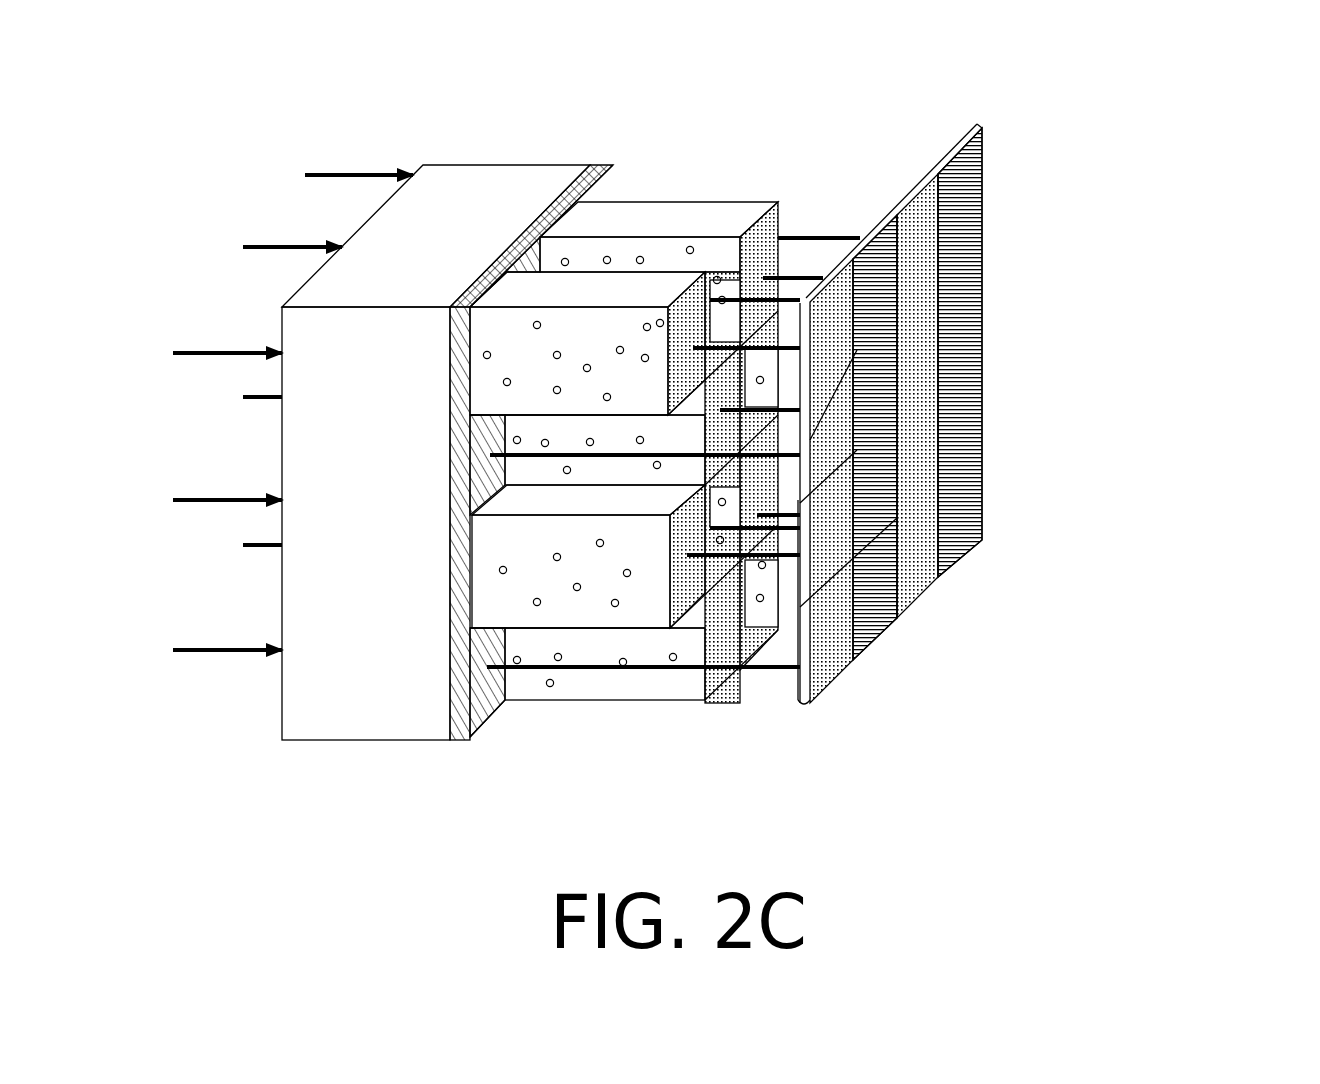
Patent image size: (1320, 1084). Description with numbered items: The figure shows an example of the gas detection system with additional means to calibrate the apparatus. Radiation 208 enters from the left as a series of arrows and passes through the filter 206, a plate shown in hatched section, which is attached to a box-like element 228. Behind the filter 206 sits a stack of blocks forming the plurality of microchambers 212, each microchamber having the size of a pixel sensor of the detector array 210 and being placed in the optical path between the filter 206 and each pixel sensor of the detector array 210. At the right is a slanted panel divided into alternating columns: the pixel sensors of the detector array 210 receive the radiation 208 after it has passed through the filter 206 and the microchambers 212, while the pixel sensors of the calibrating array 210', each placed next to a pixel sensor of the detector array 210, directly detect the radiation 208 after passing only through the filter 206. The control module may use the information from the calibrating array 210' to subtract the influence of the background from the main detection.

The housing / manifold 228 is at (436, 452).
The radiation 208 is at (212, 660).
The filter 206 is at (489, 727).
The microchambers 212 is at (569, 267).
The detector array 210 is at (975, 445).
The calibrating array 210' is at (1043, 394).